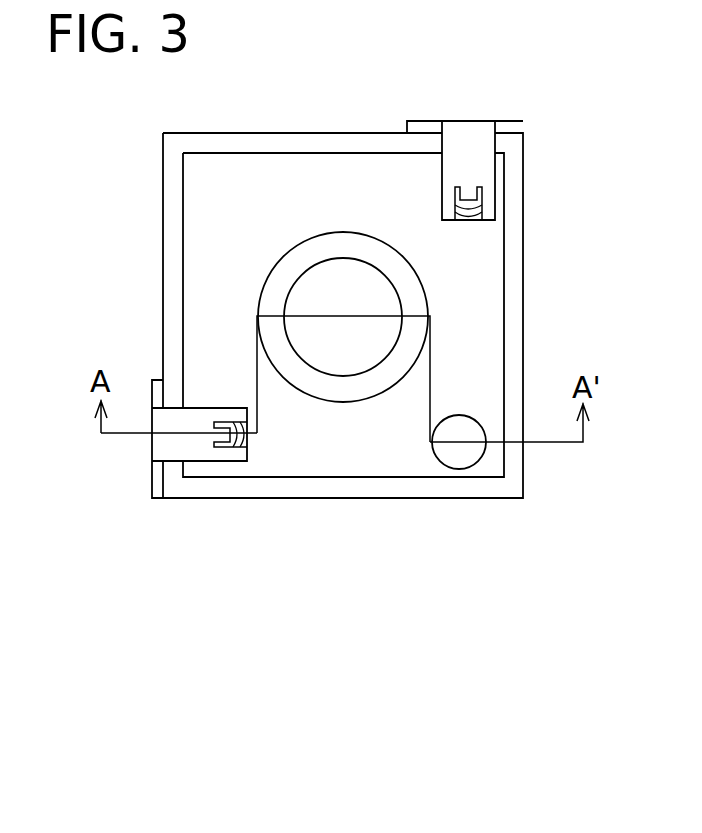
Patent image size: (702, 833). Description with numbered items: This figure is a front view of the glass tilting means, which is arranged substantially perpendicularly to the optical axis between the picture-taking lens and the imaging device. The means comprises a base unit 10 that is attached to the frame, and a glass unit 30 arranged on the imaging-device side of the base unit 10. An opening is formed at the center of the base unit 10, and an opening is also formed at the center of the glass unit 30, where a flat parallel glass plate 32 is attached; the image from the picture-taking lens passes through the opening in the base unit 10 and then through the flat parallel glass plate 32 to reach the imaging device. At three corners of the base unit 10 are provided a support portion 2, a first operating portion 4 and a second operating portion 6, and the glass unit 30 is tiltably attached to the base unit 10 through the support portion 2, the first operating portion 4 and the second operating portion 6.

The support portion 2 is at (449, 469).
The first operating portion 4 is at (126, 506).
The second operating portion 6 is at (470, 102).
The base unit 10 is at (523, 272).
The glass unit 30 is at (205, 246).
The flat parallel glass plate 32 is at (342, 277).